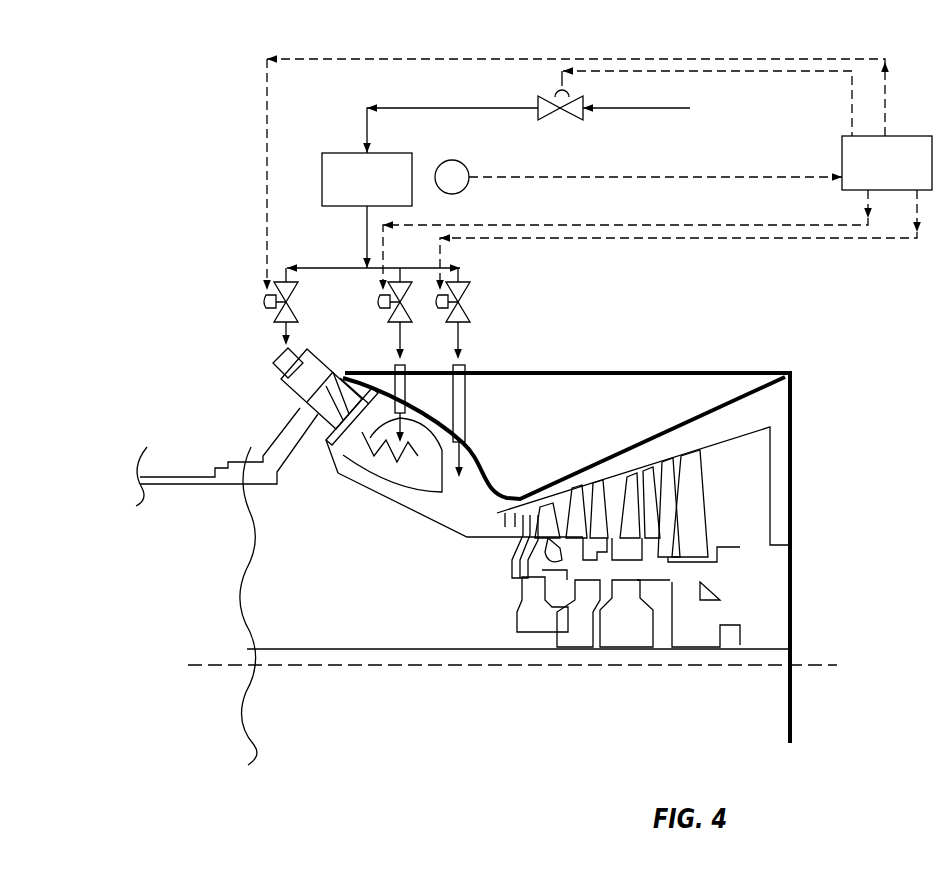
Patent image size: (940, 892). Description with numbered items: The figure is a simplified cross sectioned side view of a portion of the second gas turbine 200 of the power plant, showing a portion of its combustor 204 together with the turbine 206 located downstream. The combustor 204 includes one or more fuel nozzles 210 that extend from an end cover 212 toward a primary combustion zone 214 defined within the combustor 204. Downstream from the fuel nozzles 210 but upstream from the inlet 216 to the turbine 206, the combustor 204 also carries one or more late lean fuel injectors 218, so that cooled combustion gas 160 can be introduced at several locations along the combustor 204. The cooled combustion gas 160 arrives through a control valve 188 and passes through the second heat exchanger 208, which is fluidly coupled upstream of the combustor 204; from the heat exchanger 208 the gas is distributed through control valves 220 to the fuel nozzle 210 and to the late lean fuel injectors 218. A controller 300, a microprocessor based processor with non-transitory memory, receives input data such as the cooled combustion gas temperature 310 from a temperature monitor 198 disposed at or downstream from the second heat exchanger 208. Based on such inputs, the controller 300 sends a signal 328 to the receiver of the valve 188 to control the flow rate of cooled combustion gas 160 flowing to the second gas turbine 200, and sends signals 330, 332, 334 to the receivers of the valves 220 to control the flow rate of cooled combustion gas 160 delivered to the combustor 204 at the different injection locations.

The cooled combustion gas 160 is at (418, 108).
The control valve 188 is at (580, 116).
The temperature monitor 198 is at (452, 170).
The second gas turbine 200 is at (112, 268).
The combustor 204 is at (262, 346).
The turbine 206 is at (773, 675).
The second heat exchanger 208 is at (388, 194).
The fuel nozzle 210 is at (305, 410).
The end cover 212 is at (283, 387).
The primary combustion zone 214 is at (343, 470).
The turbine inlet 216 is at (508, 530).
The late lean fuel injector 218 is at (463, 438).
The control valve 220 is at (270, 280).
The controller 300 is at (908, 177).
The cooled combustion gas temperature 310 is at (637, 177).
The signal 328 is at (765, 72).
The signal 330 is at (683, 238).
The signal 332 is at (720, 225).
The signal 334 is at (640, 59).